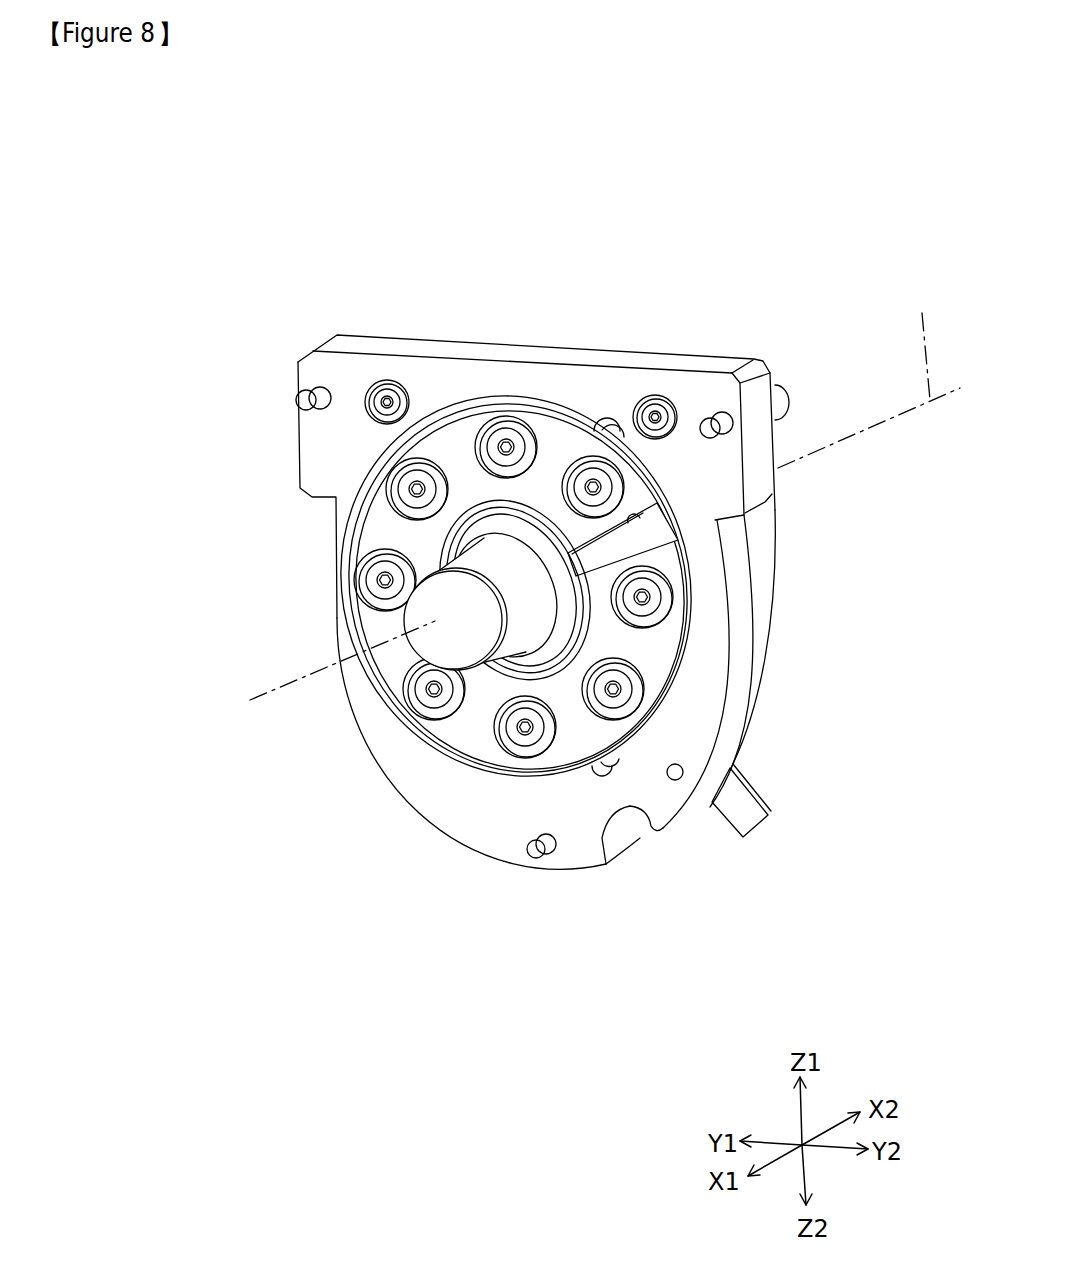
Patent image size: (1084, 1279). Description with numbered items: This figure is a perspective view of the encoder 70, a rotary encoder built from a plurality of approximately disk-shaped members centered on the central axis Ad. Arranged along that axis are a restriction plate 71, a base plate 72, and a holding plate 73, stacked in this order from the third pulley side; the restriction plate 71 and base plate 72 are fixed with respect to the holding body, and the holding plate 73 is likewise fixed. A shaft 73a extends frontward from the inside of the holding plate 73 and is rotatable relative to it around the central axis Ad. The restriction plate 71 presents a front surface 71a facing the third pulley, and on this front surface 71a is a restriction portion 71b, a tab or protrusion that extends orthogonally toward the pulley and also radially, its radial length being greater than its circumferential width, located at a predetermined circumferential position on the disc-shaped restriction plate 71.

The encoder 70 is at (422, 868).
The restriction plate 71 is at (657, 673).
The front surface 71a is at (377, 530).
The restriction portion 71b is at (632, 538).
The base plate 72 is at (708, 648).
The holding plate 73 is at (757, 570).
The shaft 73a is at (447, 640).
The central axis Ad is at (605, 490).